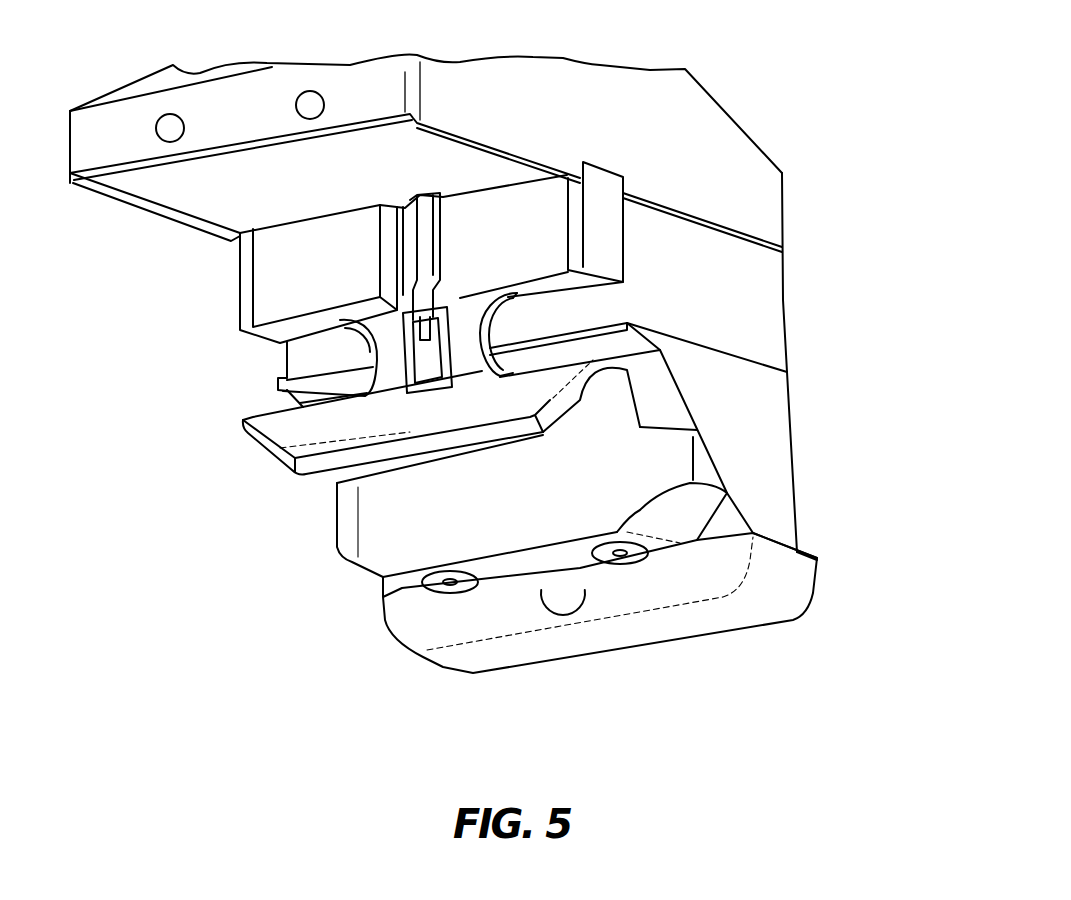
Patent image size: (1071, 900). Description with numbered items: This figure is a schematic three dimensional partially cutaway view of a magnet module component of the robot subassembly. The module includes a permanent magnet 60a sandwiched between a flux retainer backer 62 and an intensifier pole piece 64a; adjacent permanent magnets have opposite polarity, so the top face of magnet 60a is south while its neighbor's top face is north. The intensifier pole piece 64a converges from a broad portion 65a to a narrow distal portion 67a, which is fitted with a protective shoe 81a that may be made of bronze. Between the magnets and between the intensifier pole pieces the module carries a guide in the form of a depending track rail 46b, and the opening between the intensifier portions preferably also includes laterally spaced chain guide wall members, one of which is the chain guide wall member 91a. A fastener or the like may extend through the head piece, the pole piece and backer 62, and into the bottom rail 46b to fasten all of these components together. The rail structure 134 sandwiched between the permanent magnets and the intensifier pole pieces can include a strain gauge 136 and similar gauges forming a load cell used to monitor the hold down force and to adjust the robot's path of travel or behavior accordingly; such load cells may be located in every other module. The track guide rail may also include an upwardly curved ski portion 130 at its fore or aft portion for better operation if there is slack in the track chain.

The flux retainer backer 62 is at (693, 128).
The permanent magnet 60a is at (760, 269).
The intensifier pole piece 64a is at (747, 418).
The broad portion 65a is at (795, 462).
The narrow distal portion 67a is at (780, 523).
The protective shoe 81a is at (783, 600).
The rail structure 134 is at (267, 300).
The strain gauge 136 is at (420, 353).
The rail 46b is at (328, 430).
The chain guide wall member 91a is at (627, 468).
The ski portion 130 is at (687, 522).